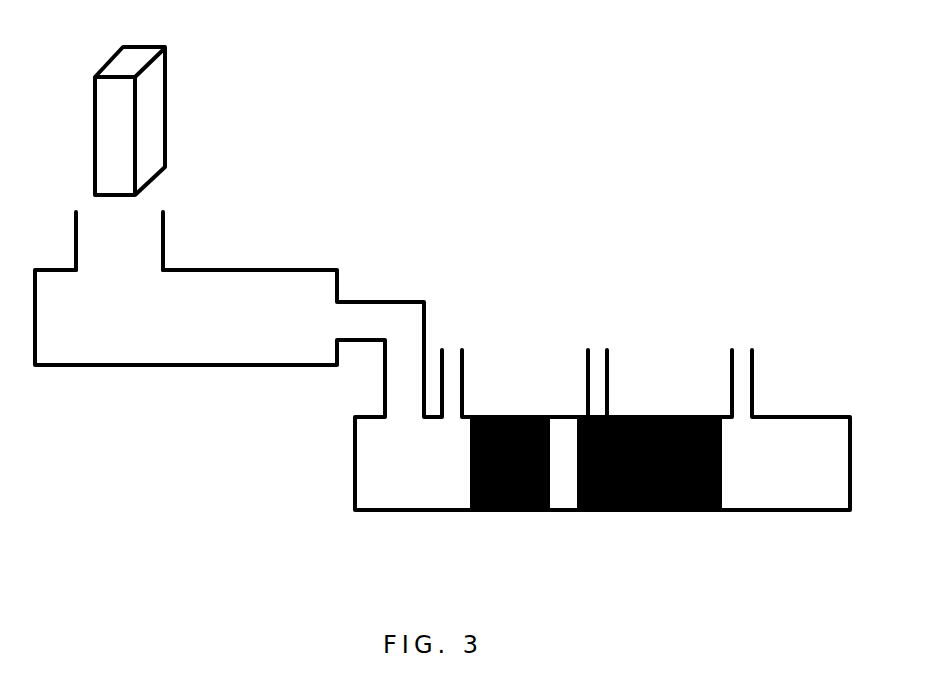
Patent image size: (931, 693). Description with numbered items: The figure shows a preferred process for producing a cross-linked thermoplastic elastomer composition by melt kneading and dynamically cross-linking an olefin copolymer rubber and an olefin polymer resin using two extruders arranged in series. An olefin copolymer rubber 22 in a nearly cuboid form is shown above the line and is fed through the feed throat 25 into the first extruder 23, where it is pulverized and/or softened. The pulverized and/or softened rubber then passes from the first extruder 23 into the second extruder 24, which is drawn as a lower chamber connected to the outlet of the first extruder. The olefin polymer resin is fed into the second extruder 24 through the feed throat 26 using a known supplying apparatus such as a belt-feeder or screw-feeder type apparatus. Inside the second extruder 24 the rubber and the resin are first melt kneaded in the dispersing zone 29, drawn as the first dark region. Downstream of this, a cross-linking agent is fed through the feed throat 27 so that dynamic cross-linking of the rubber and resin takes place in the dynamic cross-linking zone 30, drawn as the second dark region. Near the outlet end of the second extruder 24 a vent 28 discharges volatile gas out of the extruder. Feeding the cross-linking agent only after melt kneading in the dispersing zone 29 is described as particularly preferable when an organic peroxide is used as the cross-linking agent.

The olefin copolymer rubber 22 is at (150, 106).
The first extruder 23 is at (123, 333).
The second extruder 24 is at (386, 462).
The feed throat 25 is at (170, 233).
The feed throat 26 is at (469, 363).
The feed throat 27 is at (616, 361).
The vent 28 is at (757, 364).
The dispersing zone 29 is at (509, 516).
The dynamic cross-linking zone 30 is at (653, 516).